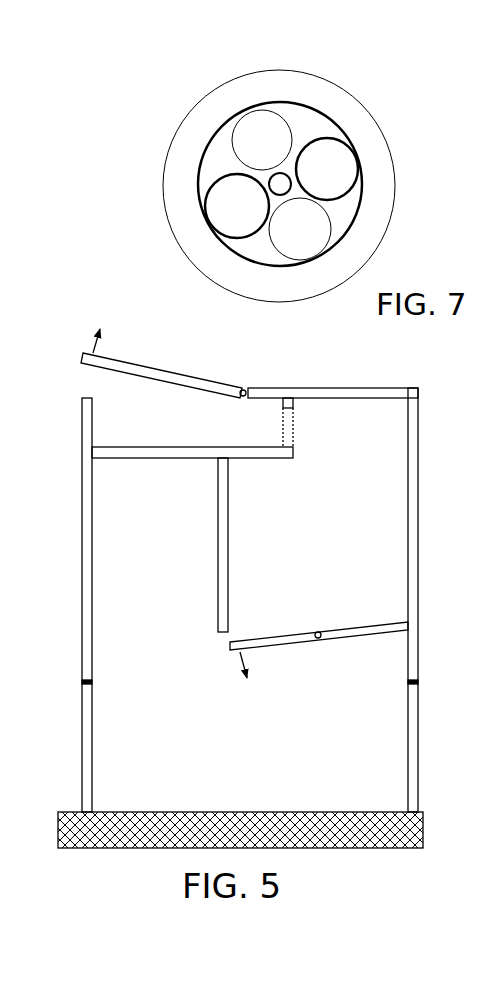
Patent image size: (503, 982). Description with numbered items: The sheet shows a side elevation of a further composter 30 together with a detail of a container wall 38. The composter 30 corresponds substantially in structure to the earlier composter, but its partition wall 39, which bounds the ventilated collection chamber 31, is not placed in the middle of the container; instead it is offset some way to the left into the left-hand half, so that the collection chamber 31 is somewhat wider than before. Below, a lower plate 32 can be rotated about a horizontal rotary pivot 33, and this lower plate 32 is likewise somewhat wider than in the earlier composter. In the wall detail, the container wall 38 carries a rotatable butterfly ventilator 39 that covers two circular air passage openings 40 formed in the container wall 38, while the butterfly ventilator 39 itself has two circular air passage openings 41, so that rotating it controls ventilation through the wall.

In FIG. 5, the composter 30 is at (430, 494).
In FIG. 5, the ventilated collection chamber 31 is at (372, 568).
In FIG. 5, the lower plate 32 is at (368, 628).
In FIG. 5, the horizontal rotary pivot 33 is at (317, 638).
In FIG. 7, the container wall 38 is at (375, 145).
In FIG. 7, the partition wall / butterfly ventilator 39 is at (303, 127).
In FIG. 5, the partition wall / butterfly ventilator 39 is at (220, 518).
In FIG. 7, the circular air passage openings 40 is at (298, 243).
In FIG. 7, the circular air passage openings 41 is at (337, 175).